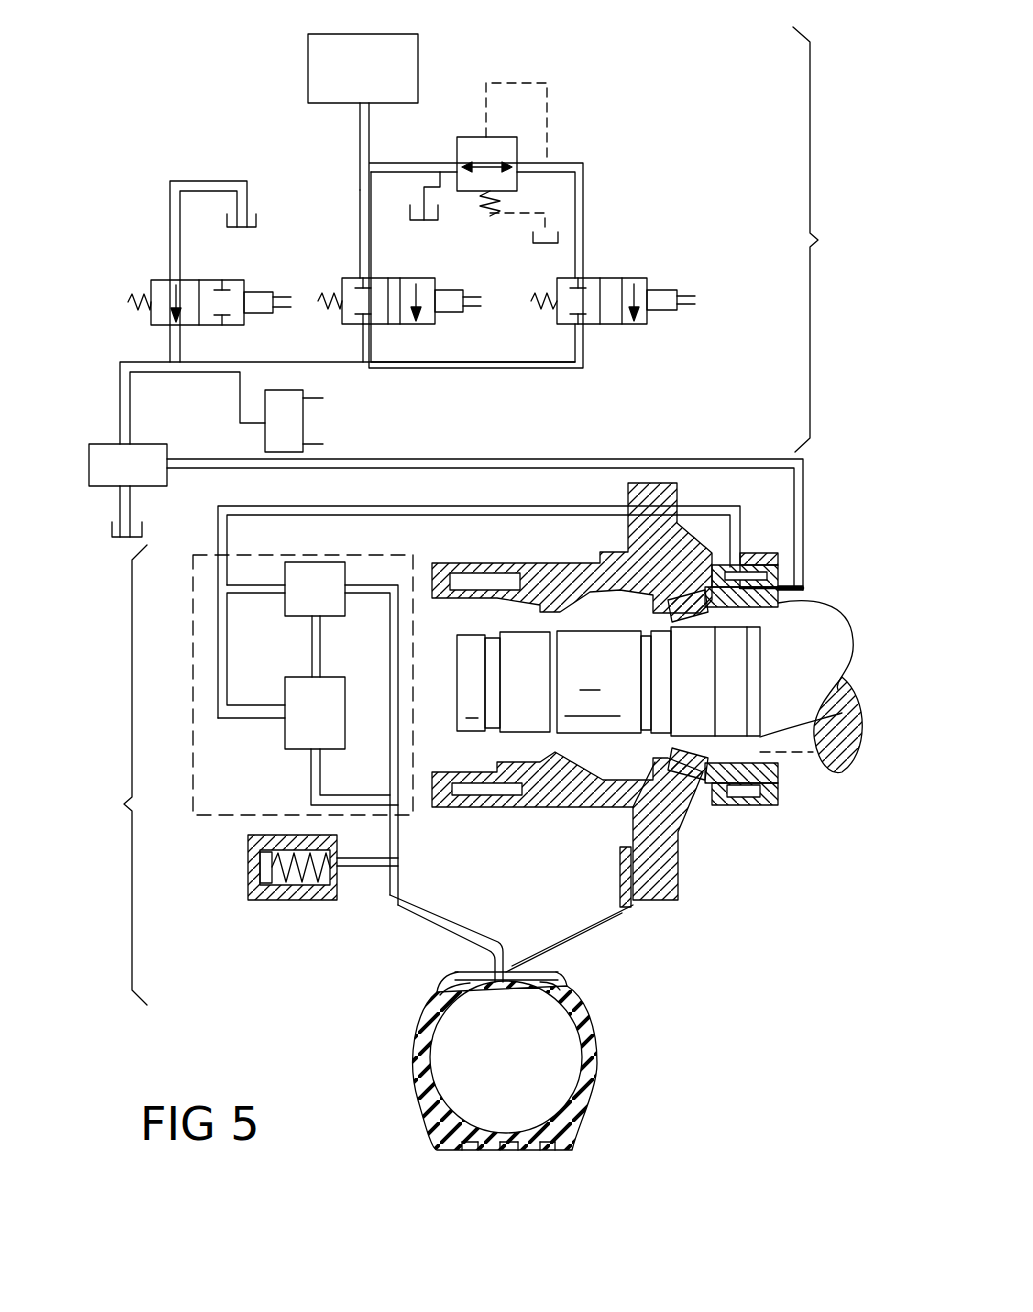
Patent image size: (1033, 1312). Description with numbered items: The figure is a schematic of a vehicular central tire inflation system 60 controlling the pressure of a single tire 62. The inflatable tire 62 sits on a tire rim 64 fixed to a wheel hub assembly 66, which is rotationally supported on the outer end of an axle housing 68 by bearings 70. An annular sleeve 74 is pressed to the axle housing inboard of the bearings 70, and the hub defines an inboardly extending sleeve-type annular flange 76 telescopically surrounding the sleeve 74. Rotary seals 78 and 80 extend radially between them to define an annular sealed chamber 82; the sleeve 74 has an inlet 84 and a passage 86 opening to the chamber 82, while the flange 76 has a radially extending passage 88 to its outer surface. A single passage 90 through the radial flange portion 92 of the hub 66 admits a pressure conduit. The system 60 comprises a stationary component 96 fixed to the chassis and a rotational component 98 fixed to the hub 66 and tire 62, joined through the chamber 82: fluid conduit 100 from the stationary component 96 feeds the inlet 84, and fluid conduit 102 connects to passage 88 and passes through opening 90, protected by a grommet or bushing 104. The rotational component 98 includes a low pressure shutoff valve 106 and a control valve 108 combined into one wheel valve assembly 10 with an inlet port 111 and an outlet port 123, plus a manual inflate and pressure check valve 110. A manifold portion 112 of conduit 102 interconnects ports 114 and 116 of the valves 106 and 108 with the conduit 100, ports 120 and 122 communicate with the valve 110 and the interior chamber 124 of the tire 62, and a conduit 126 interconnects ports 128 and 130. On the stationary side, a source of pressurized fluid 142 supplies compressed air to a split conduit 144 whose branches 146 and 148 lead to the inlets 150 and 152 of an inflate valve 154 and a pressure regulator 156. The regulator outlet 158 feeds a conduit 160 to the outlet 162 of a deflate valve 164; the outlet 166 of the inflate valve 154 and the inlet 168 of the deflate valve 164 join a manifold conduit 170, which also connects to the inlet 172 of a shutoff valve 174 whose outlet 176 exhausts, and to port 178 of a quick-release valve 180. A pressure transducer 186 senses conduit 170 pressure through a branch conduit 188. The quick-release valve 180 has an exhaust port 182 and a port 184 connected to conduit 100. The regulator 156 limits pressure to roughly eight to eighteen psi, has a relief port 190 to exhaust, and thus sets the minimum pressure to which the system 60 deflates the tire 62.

The wheel valve assembly 10 is at (191, 775).
The central tire inflation system 60 is at (750, 440).
The inflatable tire 62 is at (590, 1057).
The tire rim 64 is at (568, 983).
The wheel hub assembly 66 is at (575, 798).
The axle housing 68 is at (814, 745).
The bearings 70 is at (696, 722).
The annular sleeve 74 is at (815, 720).
The sleeve-type annular flange 76 is at (755, 810).
The rotary seal 78 is at (718, 795).
The rotary seal 80 is at (780, 788).
The annular sealed chamber 82 is at (740, 795).
The inlet 84 is at (796, 590).
The passage 86 is at (752, 596).
The radially extending passage 88 is at (733, 572).
The passage 90 is at (627, 513).
The radial flange portion 92 is at (643, 870).
The stationary component 96 is at (826, 239).
The rotational component 98 is at (116, 775).
The fluid conduit 100 is at (718, 457).
The fluid conduit 102 is at (729, 507).
The grommet or bushing 104 is at (628, 500).
The low pressure shutoff valve 106 is at (306, 556).
The control valve 108 is at (304, 762).
The manual inflate and pressure check valve 110 is at (240, 866).
The inlet port 111 is at (220, 545).
The manifold portion 112 is at (219, 645).
The port 114 is at (284, 578).
The port 116 is at (284, 719).
The port 120 is at (397, 582).
The port 122 is at (320, 752).
The outlet port 123 is at (400, 818).
The interior chamber 124 is at (532, 1073).
The conduit 126 is at (321, 640).
The port 128 is at (311, 629).
The port 130 is at (311, 668).
The air source 142 is at (308, 78).
The split conduit 144 is at (358, 133).
The branch 146 is at (358, 196).
The branch 148 is at (402, 170).
The inlet 150 is at (363, 277).
The inlet 152 is at (457, 165).
The inflate valve 154 is at (418, 266).
The pressure regulator 156 is at (572, 128).
The outlet 158 is at (519, 167).
The conduit 160 is at (584, 212).
The outlet 162 is at (578, 277).
The deflate valve 164 is at (662, 322).
The outlet 166 is at (362, 328).
The inlet 168 is at (580, 326).
The manifold conduit 170 is at (477, 368).
The inlet 172 is at (173, 327).
The shutoff valve 174 is at (200, 274).
The outlet 176 is at (170, 277).
The port 178 is at (124, 442).
The quick-release valve 180 is at (160, 512).
The port 182 is at (124, 490).
The port 184 is at (170, 471).
The pressure transducer 186 is at (322, 411).
The branch conduit 188 is at (238, 377).
The relief port 190 is at (452, 192).